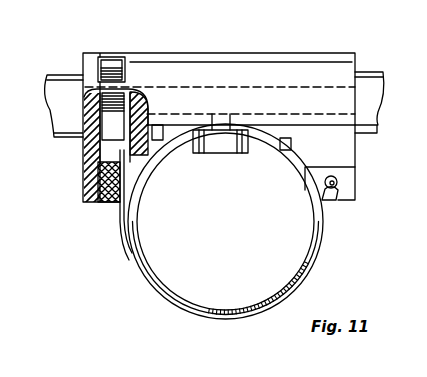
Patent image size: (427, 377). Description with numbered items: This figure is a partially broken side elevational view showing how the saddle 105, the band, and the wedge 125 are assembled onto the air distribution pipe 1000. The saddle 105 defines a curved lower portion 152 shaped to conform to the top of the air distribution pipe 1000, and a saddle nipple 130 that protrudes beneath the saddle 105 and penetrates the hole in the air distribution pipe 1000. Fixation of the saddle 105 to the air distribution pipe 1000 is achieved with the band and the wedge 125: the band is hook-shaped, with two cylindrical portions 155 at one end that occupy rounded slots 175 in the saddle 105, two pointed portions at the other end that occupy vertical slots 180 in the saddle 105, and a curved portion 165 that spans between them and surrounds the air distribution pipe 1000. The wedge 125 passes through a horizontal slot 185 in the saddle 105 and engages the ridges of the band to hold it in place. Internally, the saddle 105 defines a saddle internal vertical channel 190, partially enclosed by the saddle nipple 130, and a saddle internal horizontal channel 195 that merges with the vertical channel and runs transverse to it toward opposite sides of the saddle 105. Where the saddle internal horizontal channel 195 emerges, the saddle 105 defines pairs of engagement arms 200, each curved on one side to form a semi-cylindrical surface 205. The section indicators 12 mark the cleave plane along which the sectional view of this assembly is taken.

The section line 12- 12 is at (97, 50).
The saddle 105 is at (328, 48).
The wedge 125 is at (96, 166).
The saddle nipple 130 is at (238, 154).
The curved lower portion 152 is at (287, 163).
The cylindrical portions 155 is at (338, 185).
The curved portion 165 is at (147, 280).
The rounded slots 175 is at (337, 205).
The vertical slots 180 is at (122, 58).
The horizontal slot 185 is at (96, 186).
The saddle internal vertical channel 190 is at (218, 153).
The saddle internal horizontal channel 195 is at (258, 105).
The engagement arms 200 is at (74, 71).
The semi-cylindrical surface 205 is at (368, 127).
The air distribution pipe 1000 is at (165, 295).